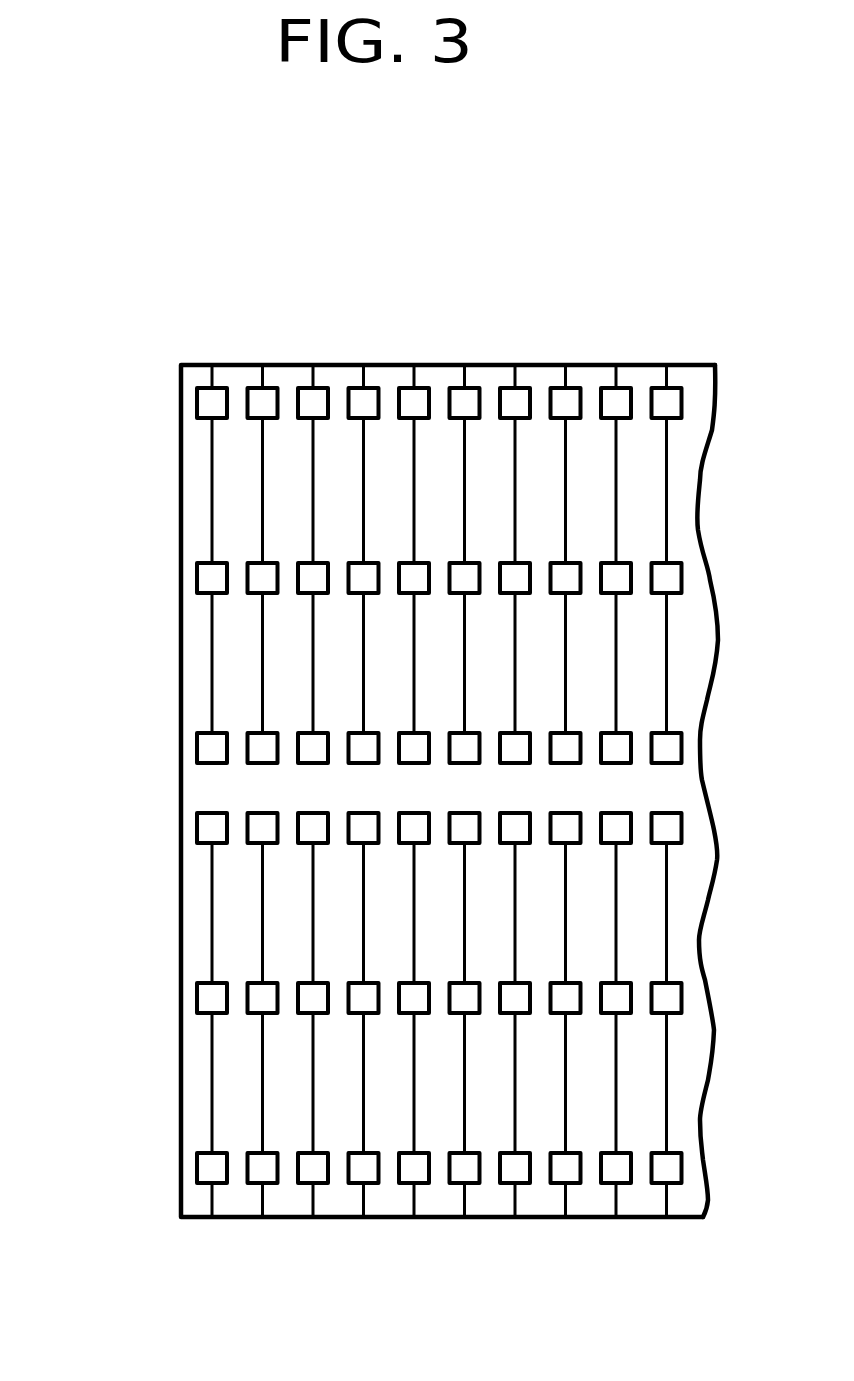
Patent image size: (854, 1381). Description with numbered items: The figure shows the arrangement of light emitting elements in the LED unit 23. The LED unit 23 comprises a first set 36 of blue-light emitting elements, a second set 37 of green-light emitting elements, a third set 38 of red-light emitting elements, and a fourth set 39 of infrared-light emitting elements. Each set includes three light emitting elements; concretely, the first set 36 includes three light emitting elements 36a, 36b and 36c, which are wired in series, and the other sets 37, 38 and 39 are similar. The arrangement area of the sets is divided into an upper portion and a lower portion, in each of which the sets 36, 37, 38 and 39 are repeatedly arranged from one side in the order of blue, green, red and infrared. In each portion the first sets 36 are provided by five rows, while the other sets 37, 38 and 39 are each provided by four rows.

The LED unit 23 is at (588, 365).
The first set of blue-light emitting elements 36 is at (212, 388).
The light emitting element 36a is at (197, 404).
The light emitting element 36b is at (197, 579).
The light emitting element 36c is at (197, 749).
The second set of green-light emitting elements 37 is at (262, 388).
The third set of red-light emitting elements 38 is at (313, 388).
The fourth set of infrared-light emitting elements 39 is at (364, 388).